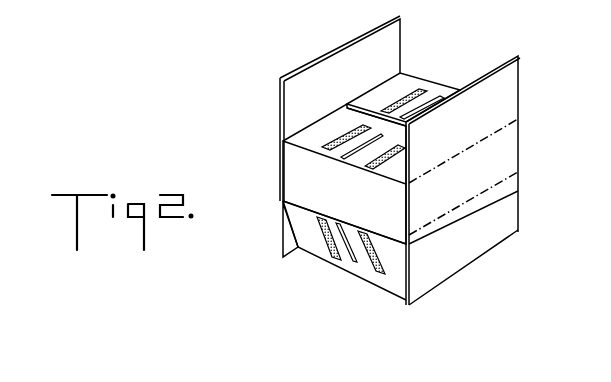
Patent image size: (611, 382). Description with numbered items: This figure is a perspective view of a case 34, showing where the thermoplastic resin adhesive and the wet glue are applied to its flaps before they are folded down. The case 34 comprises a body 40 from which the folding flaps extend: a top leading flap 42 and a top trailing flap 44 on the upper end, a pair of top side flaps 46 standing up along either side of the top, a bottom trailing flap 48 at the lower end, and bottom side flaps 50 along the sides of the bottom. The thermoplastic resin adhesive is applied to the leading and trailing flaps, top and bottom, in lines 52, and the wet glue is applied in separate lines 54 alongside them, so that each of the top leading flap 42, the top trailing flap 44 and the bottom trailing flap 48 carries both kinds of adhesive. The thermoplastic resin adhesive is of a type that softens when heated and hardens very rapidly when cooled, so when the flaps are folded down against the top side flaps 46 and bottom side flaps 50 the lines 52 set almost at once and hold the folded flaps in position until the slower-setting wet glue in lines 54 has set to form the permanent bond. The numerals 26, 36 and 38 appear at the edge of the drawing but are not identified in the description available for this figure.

The housing 26 is at (498, 0).
The case 34 is at (506, 208).
The inlet 36 is at (263, 0).
The outlet 38 is at (151, 0).
The body 40 is at (292, 156).
The top leading flap 42 is at (403, 82).
The top trailing flap 44 is at (310, 133).
The top side flaps 46 is at (323, 75).
The bottom trailing flap 48 is at (313, 246).
The bottom side flaps 50 is at (282, 238).
The lines of thermoplastic resin adhesive 52 is at (438, 93).
The lines of wet glue 54 is at (420, 88).